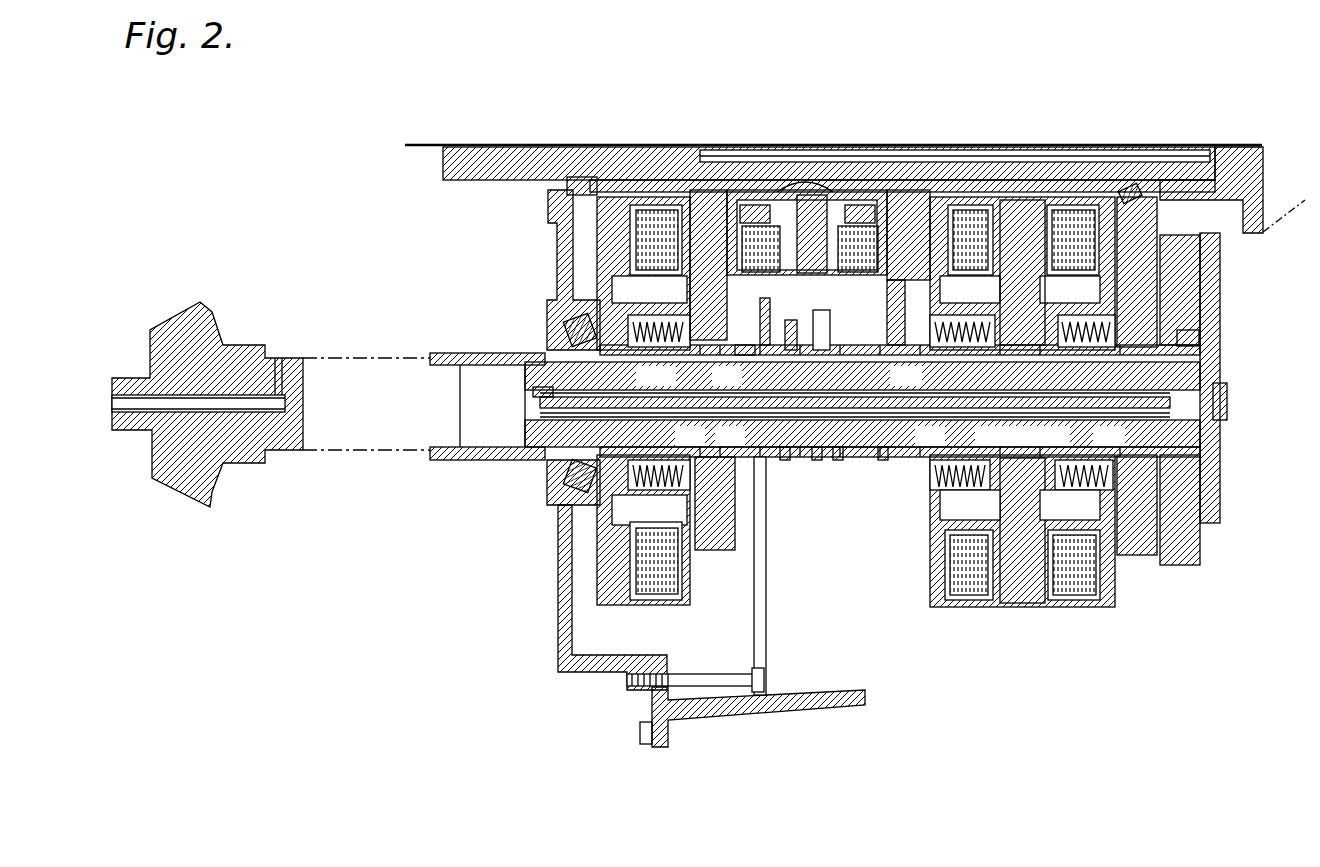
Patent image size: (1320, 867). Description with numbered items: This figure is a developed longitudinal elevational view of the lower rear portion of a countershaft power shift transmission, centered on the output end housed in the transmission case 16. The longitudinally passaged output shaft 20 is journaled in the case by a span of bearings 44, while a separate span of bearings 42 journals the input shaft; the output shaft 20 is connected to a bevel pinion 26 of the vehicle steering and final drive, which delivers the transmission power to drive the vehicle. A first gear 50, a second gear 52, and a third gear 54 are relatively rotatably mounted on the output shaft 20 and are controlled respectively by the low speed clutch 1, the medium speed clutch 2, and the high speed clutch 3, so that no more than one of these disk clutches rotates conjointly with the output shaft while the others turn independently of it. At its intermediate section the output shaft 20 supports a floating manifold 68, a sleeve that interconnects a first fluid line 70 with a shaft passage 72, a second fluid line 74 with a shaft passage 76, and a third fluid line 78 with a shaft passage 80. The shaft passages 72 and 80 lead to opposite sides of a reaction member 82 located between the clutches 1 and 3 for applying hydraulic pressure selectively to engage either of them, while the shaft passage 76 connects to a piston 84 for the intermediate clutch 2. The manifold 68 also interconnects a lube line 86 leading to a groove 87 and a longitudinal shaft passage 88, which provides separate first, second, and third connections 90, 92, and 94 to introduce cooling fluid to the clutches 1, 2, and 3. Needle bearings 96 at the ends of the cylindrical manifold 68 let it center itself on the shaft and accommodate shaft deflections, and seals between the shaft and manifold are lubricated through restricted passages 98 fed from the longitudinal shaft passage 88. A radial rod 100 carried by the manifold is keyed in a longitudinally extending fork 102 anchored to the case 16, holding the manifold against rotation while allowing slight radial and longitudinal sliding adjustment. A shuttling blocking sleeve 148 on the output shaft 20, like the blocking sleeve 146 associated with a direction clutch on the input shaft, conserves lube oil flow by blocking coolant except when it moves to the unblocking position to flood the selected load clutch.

The low speed clutch 1 is at (1077, 588).
The medium speed clutch 2 is at (645, 608).
The high speed clutch 3 is at (952, 567).
The transmission case 16 is at (1213, 262).
The output shaft 20 is at (530, 352).
The bevel pinion 26 is at (190, 340).
The span of bearings 42 is at (563, 187).
The span of bearings 44 is at (548, 340).
The first gear 50 is at (1220, 296).
The second gear 52 is at (723, 540).
The third gear 54 is at (890, 308).
The floating manifold 68 is at (817, 460).
The first fluid line 70 is at (822, 315).
The shaft passage 72 is at (906, 376).
The second fluid line 74 is at (767, 330).
The shaft passage 76 is at (727, 376).
The third fluid line 78 is at (793, 345).
The shaft passage 80 is at (955, 320).
The reaction member 82 is at (1030, 323).
The piston 84 is at (659, 492).
The lube line 86 is at (833, 460).
The groove 87 is at (882, 463).
The longitudinal shaft passage 88 is at (730, 437).
The first connection 90 is at (1109, 437).
The second connection 92 is at (690, 437).
The third connection 94 is at (930, 437).
The needle bearings 96 is at (745, 345).
The restricted passages 98 is at (783, 460).
The radial rod 100 is at (757, 597).
The fork 102 is at (703, 680).
The blocking sleeve 146 is at (656, 376).
The shuttling blocking sleeve 148 is at (1020, 437).